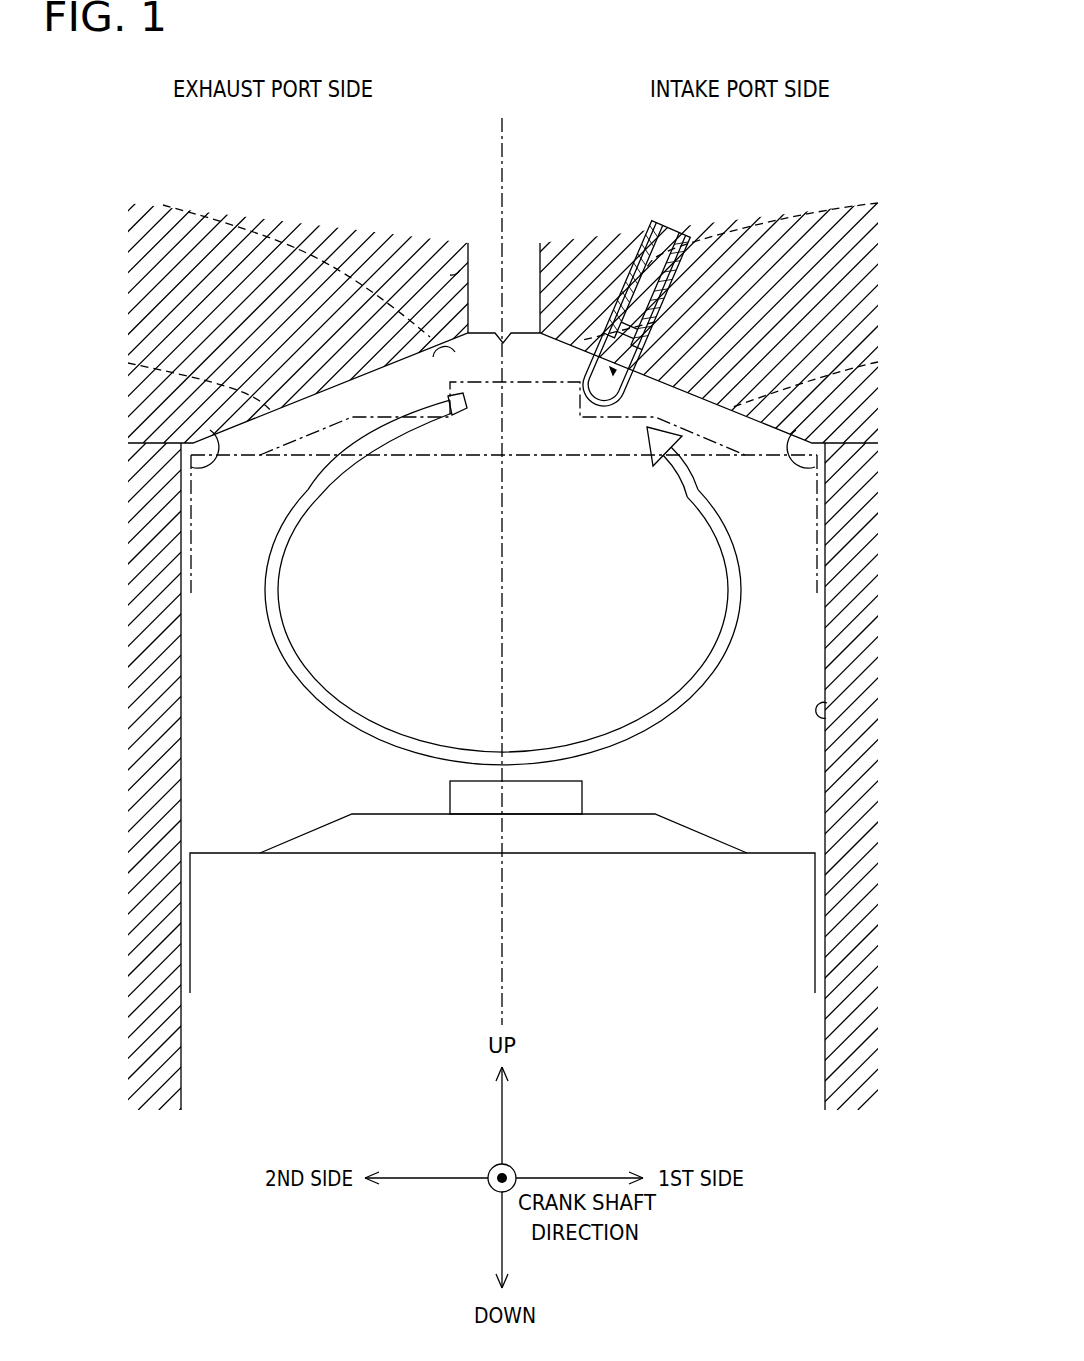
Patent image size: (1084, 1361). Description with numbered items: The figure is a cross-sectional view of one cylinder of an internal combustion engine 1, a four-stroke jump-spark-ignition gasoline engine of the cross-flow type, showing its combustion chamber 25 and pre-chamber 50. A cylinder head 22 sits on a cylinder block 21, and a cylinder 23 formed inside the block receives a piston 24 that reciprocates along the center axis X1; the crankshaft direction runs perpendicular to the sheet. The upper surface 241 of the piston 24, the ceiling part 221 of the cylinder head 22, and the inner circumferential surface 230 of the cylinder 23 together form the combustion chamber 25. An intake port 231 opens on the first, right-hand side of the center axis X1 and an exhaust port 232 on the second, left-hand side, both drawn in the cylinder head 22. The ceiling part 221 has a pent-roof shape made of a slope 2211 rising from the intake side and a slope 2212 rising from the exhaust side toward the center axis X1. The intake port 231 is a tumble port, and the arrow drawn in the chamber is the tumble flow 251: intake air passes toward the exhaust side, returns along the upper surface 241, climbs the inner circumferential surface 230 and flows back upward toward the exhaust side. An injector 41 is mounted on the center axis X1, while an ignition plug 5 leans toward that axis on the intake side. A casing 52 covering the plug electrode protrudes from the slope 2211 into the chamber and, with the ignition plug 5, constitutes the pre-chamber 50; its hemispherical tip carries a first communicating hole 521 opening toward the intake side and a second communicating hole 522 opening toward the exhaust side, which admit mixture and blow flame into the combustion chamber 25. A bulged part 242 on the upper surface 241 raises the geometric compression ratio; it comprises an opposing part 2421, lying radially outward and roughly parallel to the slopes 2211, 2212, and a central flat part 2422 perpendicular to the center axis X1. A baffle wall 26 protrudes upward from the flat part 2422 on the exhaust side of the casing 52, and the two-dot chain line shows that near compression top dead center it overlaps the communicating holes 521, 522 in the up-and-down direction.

The internal combustion engine 1 is at (902, 163).
The ignition plug 5 is at (636, 268).
The cylinder block 21 is at (162, 710).
The cylinder head 22 is at (162, 401).
The cylinder 23 is at (825, 675).
The piston 24 is at (818, 545).
The combustion chamber 25 is at (395, 623).
The baffle wall 26 is at (583, 800).
The injector 41 is at (453, 265).
The pre-chamber 50 is at (600, 410).
The casing 52 is at (592, 360).
The ceiling part 221 is at (432, 345).
The inner circumferential surface 230 is at (828, 704).
The intake port 231 is at (773, 222).
The exhaust port 232 is at (250, 228).
The upper surface 241 is at (207, 848).
The bulged part 242 is at (342, 845).
The tumble flow 251 is at (305, 693).
The first communicating hole 521 is at (612, 405).
The second communicating hole 522 is at (580, 395).
The slope 2211 is at (822, 462).
The slope 2212 is at (195, 455).
The opposing part 2421 is at (312, 830).
The flat part 2422 is at (414, 805).
The center axis X1 is at (505, 132).